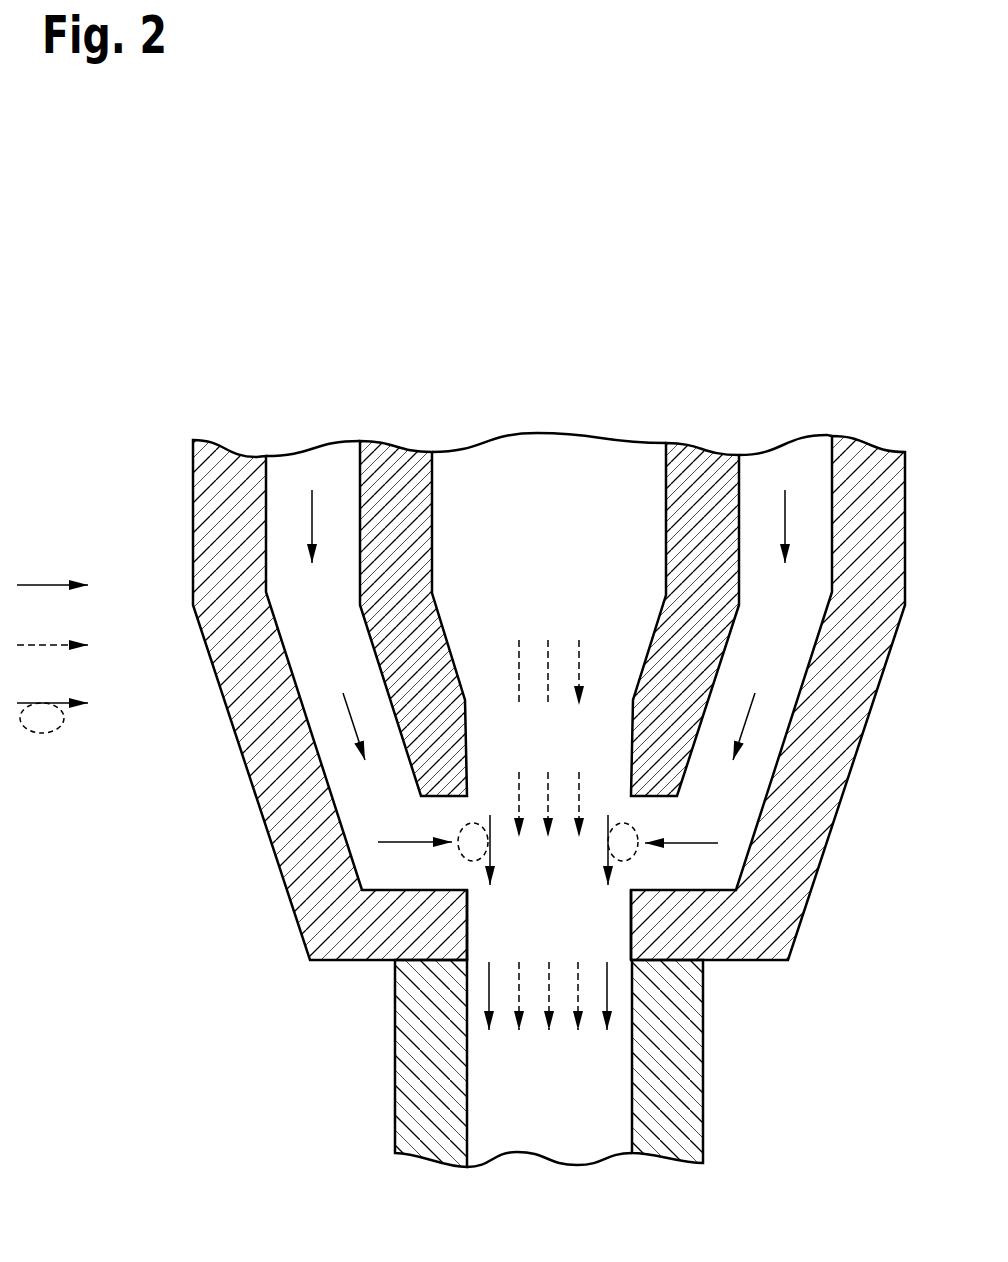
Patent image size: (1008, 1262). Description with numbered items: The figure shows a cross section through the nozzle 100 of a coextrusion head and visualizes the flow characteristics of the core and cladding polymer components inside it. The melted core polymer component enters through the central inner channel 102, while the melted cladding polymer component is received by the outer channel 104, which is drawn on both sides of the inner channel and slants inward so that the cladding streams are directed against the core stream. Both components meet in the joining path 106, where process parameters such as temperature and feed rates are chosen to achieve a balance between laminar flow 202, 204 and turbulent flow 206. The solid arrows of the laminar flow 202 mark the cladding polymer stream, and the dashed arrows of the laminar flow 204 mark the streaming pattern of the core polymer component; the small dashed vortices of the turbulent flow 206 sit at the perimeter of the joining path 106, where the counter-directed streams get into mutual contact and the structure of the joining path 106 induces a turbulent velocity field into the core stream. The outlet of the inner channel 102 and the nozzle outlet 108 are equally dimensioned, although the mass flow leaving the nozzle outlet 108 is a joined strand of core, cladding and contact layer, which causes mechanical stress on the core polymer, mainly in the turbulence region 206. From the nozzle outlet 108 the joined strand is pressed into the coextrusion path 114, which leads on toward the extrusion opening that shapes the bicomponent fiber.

The nozzle 100 is at (233, 867).
The inner channel 102 is at (571, 533).
The outer channel 104 is at (337, 612).
The joining path 106 is at (572, 878).
The nozzle outlet 108 is at (572, 942).
The coextrusion path 114 is at (571, 1123).
The laminar flow 202 is at (81, 586).
The laminar flow 204 is at (81, 646).
The turbulent flow 206 is at (81, 710).